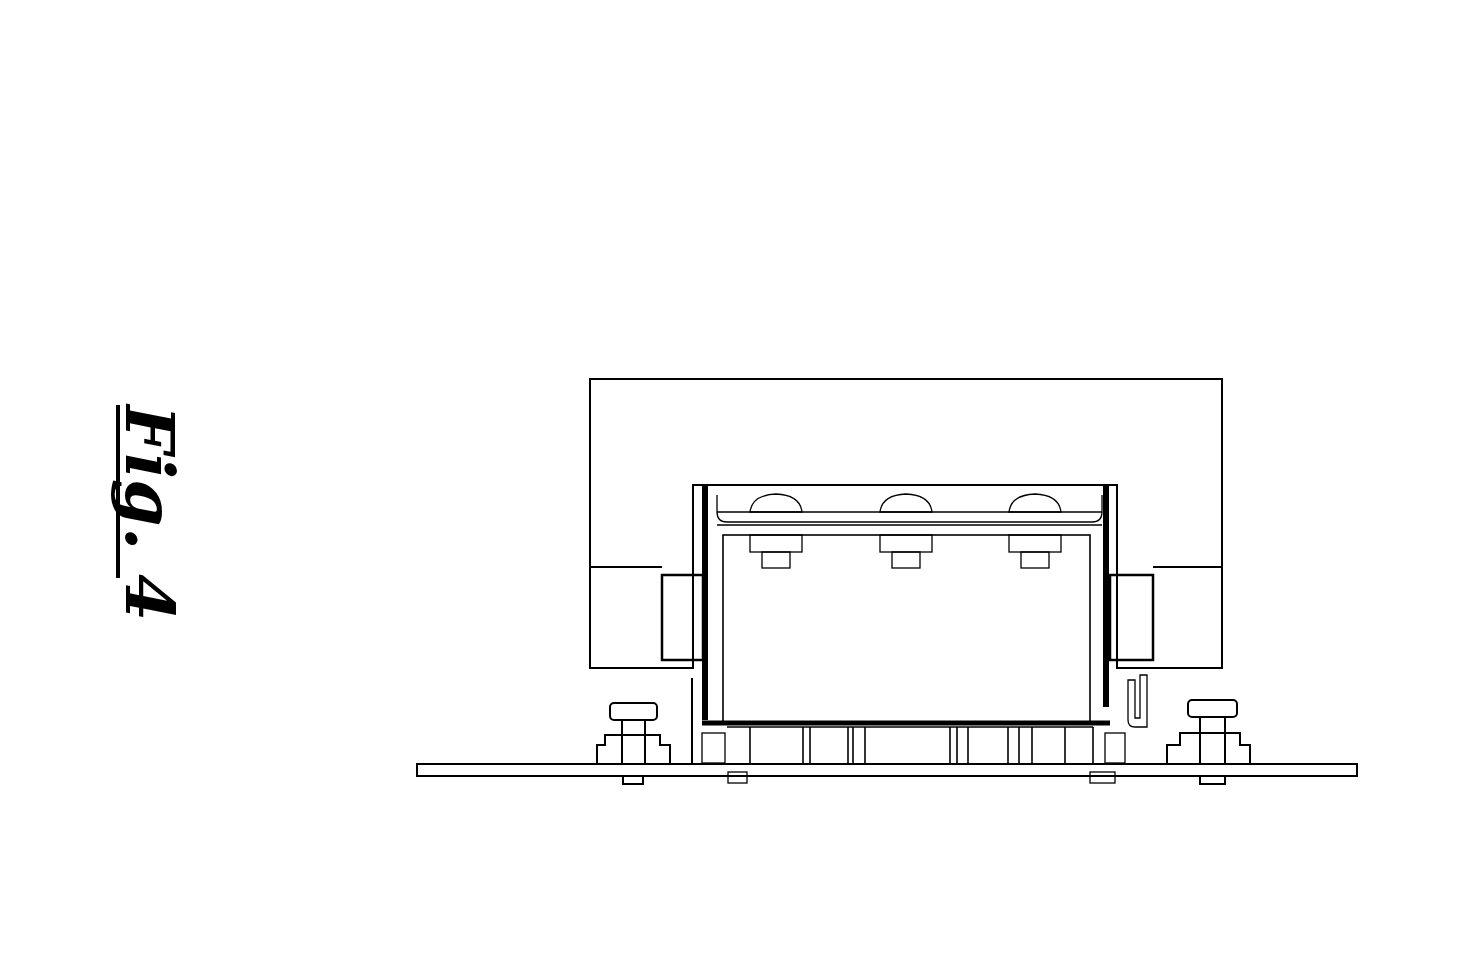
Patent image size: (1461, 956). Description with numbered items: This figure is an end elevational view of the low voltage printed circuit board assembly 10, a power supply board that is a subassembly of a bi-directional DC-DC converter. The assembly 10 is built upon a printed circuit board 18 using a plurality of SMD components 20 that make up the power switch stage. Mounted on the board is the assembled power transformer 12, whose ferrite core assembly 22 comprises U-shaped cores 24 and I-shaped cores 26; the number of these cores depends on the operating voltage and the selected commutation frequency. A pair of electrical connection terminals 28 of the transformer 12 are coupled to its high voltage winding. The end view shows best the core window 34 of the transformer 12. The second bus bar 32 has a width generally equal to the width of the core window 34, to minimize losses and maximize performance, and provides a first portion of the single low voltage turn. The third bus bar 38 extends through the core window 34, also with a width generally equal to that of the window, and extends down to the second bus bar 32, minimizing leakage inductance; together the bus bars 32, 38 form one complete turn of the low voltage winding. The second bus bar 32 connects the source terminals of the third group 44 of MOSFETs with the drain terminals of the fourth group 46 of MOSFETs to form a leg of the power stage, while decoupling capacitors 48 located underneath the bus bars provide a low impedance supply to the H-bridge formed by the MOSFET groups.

The low voltage printed circuit board assembly 10 is at (1200, 127).
The power transformer 12 is at (938, 376).
The printed circuit board 18 is at (450, 764).
The SMD components 20 is at (562, 731).
The ferrite core assembly 22 is at (1115, 376).
The U-shaped cores 24 is at (1092, 440).
The I-shaped cores 26 is at (1213, 607).
The electrical connection terminals 28 is at (1153, 630).
The second bus bar 32 is at (880, 655).
The core window 34 is at (990, 484).
The third bus bar 38 is at (1048, 517).
The third group of MOSFETs 44 is at (1265, 694).
The fourth group of MOSFETs 46 is at (567, 686).
The decoupling capacitors 48 is at (1208, 748).